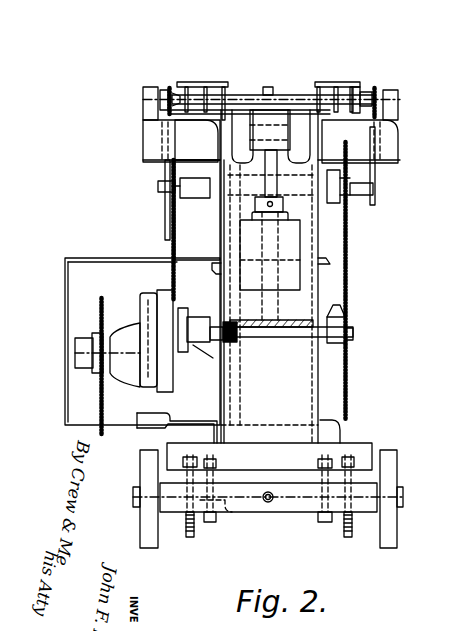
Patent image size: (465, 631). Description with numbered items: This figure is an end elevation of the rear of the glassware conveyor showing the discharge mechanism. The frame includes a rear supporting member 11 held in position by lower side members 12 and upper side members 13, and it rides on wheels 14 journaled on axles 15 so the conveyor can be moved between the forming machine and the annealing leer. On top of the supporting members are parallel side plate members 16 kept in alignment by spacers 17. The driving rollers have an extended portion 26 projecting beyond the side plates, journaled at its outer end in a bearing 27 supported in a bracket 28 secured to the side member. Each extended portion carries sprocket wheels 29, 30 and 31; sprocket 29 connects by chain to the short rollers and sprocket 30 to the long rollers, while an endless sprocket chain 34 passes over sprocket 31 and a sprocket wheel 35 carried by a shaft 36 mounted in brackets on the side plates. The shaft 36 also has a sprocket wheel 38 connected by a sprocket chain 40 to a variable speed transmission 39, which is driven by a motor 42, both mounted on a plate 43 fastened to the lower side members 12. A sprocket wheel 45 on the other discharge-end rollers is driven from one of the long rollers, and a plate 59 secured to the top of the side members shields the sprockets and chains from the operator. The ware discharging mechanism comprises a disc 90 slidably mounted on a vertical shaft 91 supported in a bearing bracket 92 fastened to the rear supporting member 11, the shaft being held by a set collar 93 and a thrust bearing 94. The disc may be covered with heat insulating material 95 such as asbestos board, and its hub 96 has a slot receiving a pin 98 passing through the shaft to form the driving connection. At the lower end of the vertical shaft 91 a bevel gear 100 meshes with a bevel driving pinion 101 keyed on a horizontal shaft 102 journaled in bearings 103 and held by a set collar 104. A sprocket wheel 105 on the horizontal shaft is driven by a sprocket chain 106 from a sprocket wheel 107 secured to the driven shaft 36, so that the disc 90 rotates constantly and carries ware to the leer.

The rear supporting member 11 is at (320, 403).
The lower side members 12 is at (147, 437).
The upper side members 13 is at (214, 268).
The wheels 14 is at (147, 513).
The axles 15 is at (134, 497).
The side plate members 16 is at (228, 85).
The spacers 17 is at (232, 152).
The extended portion 26 is at (166, 90).
The bearing 27 is at (150, 92).
The bracket 28 is at (362, 166).
The sprocket wheel 29 is at (343, 85).
The sprocket wheel 30 is at (357, 88).
The sprocket wheel 31 is at (170, 87).
The endless sprocket chain 34 is at (167, 170).
The sprocket wheel 35 is at (157, 187).
The shaft 36 is at (189, 190).
The sprocket wheel 38 is at (350, 202).
The variable speed transmission 39 is at (129, 332).
The sprocket chain 40 is at (350, 255).
The motor 42 is at (151, 297).
The plate 43 is at (140, 427).
The sprocket wheel 45 is at (367, 92).
The plate 59 is at (198, 82).
The disc 90 is at (280, 97).
The vertical shaft 91 is at (279, 157).
The bearing bracket 92 is at (282, 255).
The set collar 93 is at (284, 204).
The thrust bearing 94 is at (255, 218).
The heat insulating material 95 is at (250, 93).
The hub 96 is at (280, 132).
The pin 98 is at (244, 139).
The bevel gear 100 is at (300, 318).
The bevel driving pinion 101 is at (237, 340).
The horizontal shaft 102 is at (327, 343).
The bearings 103 is at (212, 318).
The set collar 104 is at (353, 333).
The sprocket wheel 105 is at (183, 353).
The sprocket chain 106 is at (176, 248).
The sprocket wheel 107 is at (172, 176).